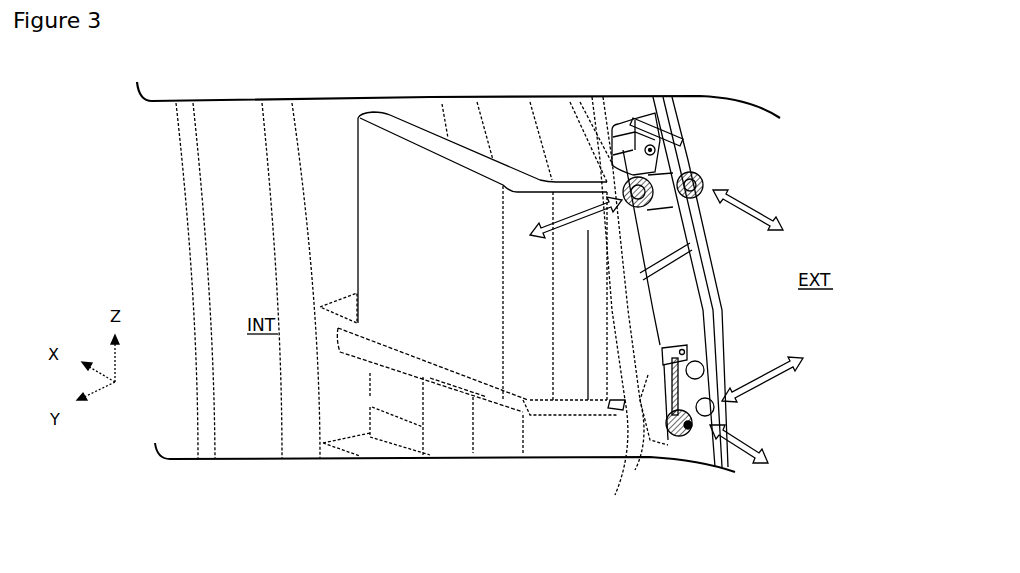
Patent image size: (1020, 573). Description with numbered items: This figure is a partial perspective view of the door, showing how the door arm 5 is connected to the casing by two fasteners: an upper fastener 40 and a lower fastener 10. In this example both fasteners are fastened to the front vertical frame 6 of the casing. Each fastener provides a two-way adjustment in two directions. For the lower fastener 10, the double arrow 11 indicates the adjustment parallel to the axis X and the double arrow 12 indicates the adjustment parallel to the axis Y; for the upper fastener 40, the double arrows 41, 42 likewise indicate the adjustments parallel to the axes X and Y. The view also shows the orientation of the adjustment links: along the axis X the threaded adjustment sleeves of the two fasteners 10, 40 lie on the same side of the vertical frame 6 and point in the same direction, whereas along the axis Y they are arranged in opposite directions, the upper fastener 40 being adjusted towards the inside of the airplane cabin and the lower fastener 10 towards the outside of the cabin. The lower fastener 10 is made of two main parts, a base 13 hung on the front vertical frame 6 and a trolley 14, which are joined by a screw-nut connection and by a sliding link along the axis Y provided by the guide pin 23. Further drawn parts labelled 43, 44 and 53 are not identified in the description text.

The door arm 5 is at (385, 235).
The front vertical frame 6 is at (637, 303).
The lower fastener 10 is at (728, 437).
The double arrow 11 is at (750, 457).
The double arrow 12 is at (778, 378).
The base 13 is at (720, 357).
The trolley 14 is at (661, 430).
The guide pin 23 is at (657, 360).
The upper fastener 40 is at (602, 128).
The double arrow 41 is at (766, 216).
The double arrow 42 is at (570, 234).
The upper bracket 43 is at (622, 185).
The upper bracket plate 44 is at (657, 157).
The frame upright 53 is at (587, 95).